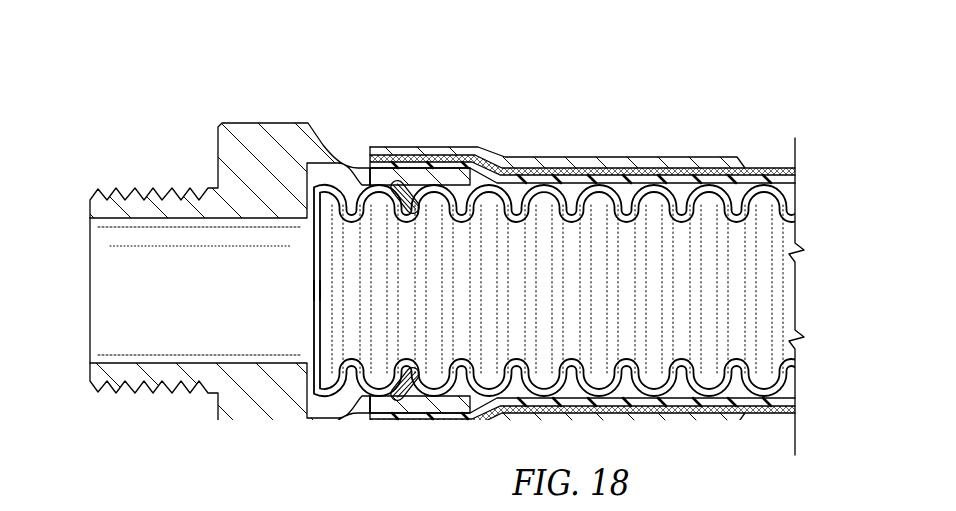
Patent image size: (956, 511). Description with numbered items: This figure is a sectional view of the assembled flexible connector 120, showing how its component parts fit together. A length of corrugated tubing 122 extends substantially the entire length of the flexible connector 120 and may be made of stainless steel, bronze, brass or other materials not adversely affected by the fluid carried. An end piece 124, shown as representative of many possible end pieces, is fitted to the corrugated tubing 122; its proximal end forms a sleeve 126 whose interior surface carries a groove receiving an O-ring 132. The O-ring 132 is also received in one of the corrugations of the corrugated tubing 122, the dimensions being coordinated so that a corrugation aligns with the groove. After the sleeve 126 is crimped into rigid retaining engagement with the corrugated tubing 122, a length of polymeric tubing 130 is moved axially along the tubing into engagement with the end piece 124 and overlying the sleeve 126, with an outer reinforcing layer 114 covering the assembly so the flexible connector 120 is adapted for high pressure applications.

The flexible connector 120 is at (494, 74).
The end piece 124 is at (243, 119).
The corrugated tubing 122 is at (585, 296).
The sleeve 126 is at (447, 178).
The outer jacket 114 is at (693, 156).
The polymeric tubing 130 is at (800, 186).
The O-ring 132 is at (748, 167).